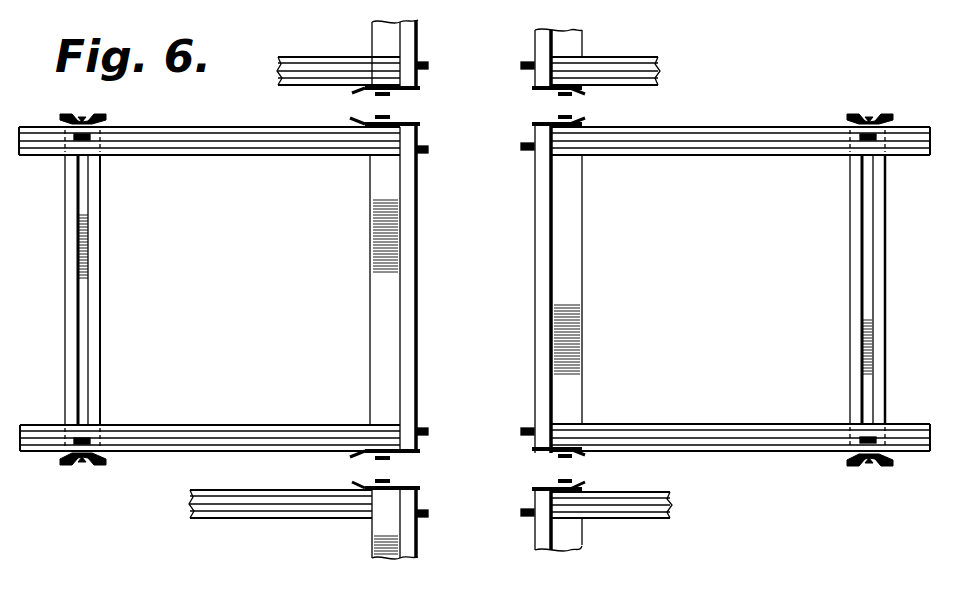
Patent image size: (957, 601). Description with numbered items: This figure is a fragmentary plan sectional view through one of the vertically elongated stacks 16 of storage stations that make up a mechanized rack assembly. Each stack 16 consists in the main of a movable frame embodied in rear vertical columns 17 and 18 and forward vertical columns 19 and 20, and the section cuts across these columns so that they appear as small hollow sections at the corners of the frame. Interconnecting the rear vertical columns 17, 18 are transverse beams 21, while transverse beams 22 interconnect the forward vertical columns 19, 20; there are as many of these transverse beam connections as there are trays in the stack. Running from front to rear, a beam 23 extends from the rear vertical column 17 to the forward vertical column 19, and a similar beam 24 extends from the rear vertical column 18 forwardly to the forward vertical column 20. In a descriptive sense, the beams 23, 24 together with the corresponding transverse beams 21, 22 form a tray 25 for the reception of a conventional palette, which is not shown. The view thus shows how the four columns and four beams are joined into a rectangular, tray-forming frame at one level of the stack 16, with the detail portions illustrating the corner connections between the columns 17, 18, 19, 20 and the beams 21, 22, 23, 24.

The stack 16 is at (232, 124).
The rear vertical column 17 is at (428, 66).
The rear vertical column 18 is at (425, 153).
The forward vertical column 19 is at (97, 112).
The forward vertical column 20 is at (94, 463).
The transverse beam 21 is at (385, 318).
The transverse beam 22 is at (75, 272).
The beam 23 is at (337, 145).
The beam 24 is at (335, 68).
The tray 25 is at (105, 277).